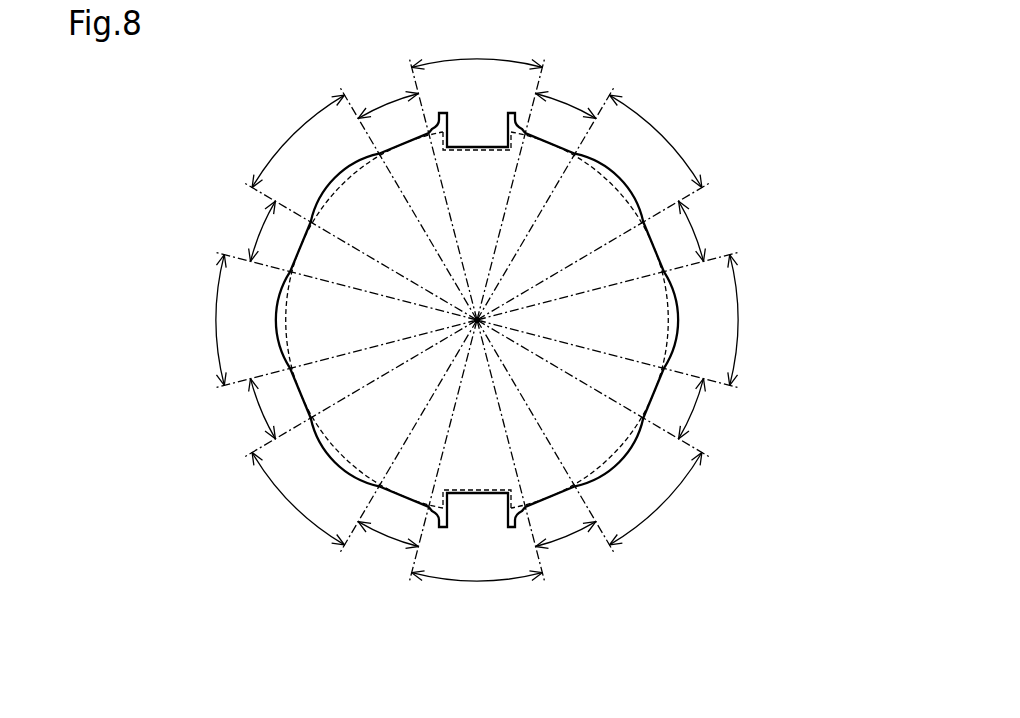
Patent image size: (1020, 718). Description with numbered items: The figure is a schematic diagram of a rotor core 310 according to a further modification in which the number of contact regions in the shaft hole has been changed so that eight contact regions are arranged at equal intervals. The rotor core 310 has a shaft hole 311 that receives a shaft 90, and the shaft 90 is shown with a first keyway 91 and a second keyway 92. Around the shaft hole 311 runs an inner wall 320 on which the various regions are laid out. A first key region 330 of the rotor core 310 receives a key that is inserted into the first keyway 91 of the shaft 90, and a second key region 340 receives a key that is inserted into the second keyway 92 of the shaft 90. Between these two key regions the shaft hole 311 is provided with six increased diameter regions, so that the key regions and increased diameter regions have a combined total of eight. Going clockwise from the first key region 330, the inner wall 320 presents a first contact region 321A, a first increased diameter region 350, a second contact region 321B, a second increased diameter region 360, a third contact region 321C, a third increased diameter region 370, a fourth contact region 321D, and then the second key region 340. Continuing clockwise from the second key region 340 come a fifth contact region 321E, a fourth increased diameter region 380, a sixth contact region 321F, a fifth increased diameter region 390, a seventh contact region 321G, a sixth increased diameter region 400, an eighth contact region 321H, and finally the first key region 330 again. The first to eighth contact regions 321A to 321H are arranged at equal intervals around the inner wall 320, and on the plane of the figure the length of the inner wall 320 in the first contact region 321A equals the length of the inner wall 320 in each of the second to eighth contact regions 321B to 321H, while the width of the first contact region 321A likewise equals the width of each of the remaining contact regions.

The rotor core 310 is at (742, 77).
The shaft hole 311 is at (540, 148).
The inner wall 320 is at (678, 320).
The first contact region 321A is at (566, 104).
The second contact region 321B is at (693, 230).
The third contact region 321C is at (693, 410).
The fourth contact region 321D is at (566, 536).
The fifth contact region 321E is at (388, 536).
The sixth contact region 321F is at (261, 410).
The seventh contact region 321G is at (261, 230).
The eighth contact region 321H is at (388, 104).
The first key region 330 is at (481, 58).
The second key region 340 is at (481, 580).
The first increased diameter region 350 is at (662, 135).
The second increased diameter region 360 is at (738, 320).
The third increased diameter region 370 is at (662, 505).
The fourth increased diameter region 380 is at (292, 505).
The fifth increased diameter region 390 is at (216, 320).
The sixth increased diameter region 400 is at (292, 135).
The shaft 90 is at (287, 320).
The first keyway 91 is at (478, 151).
The second keyway 92 is at (478, 489).